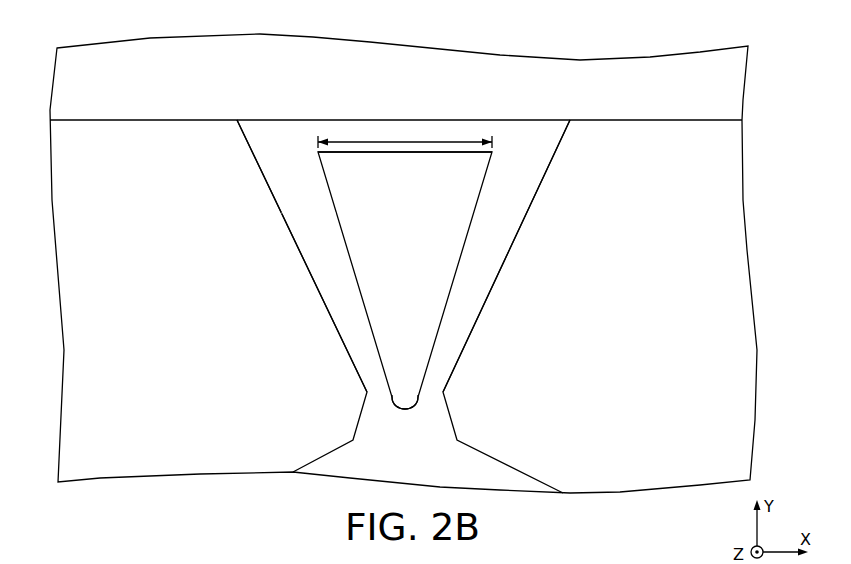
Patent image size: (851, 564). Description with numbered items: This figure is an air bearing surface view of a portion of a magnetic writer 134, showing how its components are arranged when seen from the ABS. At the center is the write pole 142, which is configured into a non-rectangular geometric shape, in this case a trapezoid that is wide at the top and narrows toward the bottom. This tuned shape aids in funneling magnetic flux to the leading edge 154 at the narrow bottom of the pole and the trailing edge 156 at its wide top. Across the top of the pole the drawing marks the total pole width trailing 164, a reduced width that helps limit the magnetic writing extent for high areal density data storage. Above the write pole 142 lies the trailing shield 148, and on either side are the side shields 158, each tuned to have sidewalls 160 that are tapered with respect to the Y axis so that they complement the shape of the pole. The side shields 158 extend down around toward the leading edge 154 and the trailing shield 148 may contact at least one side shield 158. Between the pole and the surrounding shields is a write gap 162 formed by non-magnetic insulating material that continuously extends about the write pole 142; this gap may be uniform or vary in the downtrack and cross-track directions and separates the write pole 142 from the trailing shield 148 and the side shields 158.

The magnetic writer 134 is at (107, 41).
The trailing shield 148 is at (92, 93).
The side shields 158 is at (92, 143).
The sidewalls 160 is at (307, 263).
The write pole 142 is at (422, 250).
The trailing edge 156 is at (427, 156).
The total pole width trailing 164 is at (405, 135).
The leading edge 154 is at (407, 400).
The write gap 162 is at (297, 213).